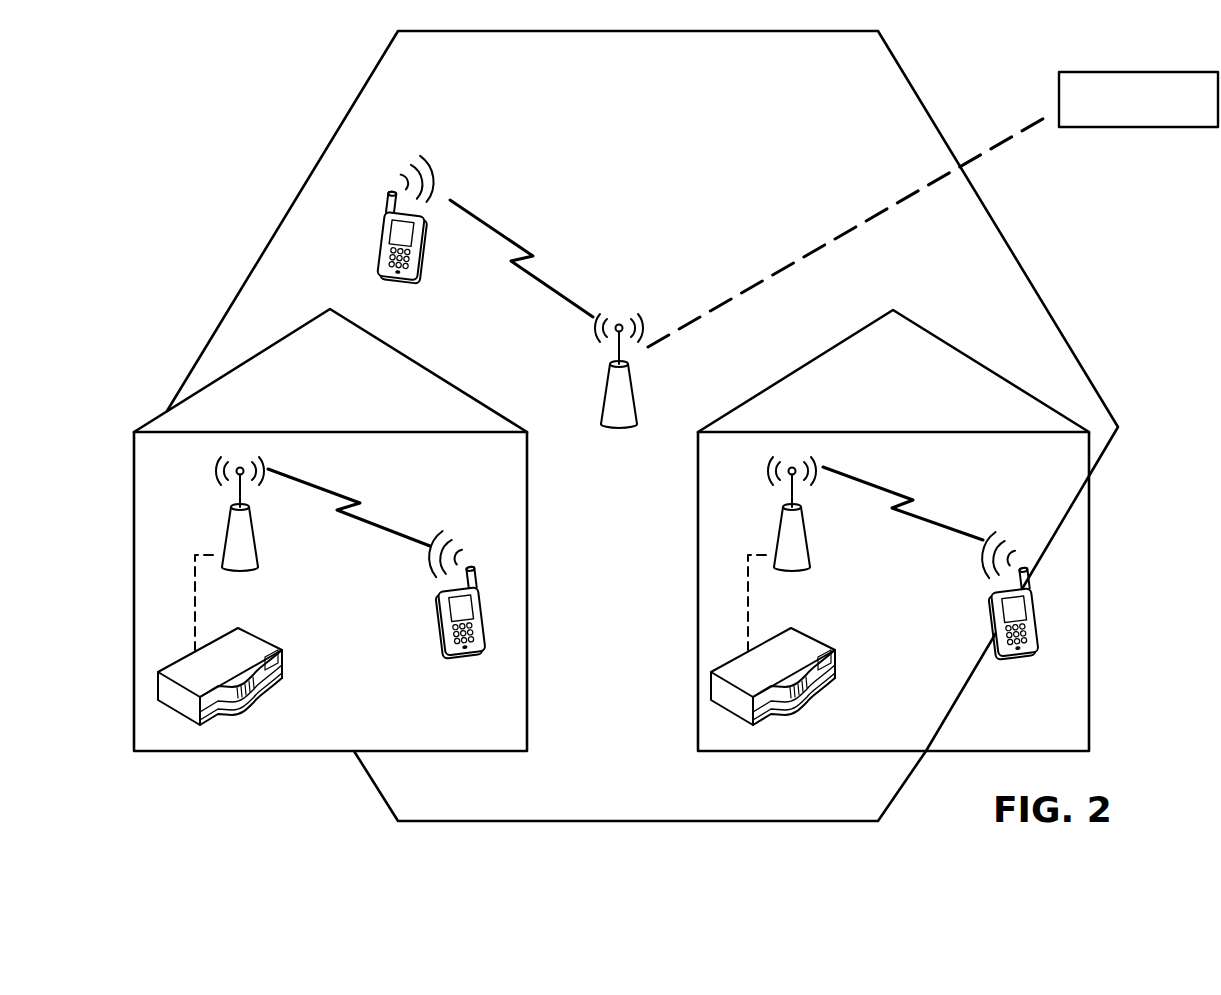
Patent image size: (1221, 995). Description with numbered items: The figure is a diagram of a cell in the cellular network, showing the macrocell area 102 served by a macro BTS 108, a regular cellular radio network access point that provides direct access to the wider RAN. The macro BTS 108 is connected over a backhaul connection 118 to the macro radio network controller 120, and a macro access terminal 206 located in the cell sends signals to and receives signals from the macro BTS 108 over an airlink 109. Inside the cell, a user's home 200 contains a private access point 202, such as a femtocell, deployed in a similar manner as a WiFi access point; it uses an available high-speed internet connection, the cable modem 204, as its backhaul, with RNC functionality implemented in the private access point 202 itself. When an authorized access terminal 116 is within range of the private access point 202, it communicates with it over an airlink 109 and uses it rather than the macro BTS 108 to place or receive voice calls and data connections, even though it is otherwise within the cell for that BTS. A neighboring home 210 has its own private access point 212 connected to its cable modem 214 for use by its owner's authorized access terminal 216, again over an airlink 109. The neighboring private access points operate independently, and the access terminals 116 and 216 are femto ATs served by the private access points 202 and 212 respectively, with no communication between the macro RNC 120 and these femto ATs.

The macrocell area 102 is at (337, 52).
The macro BTS 108 is at (599, 426).
The airlink 109 is at (625, 373).
The access terminal 116 is at (482, 655).
The backhaul connection 118 is at (826, 242).
The radio network controller 120 is at (1138, 99).
The home 200 is at (268, 752).
The private access point 202 is at (259, 567).
The cable modem 204 is at (223, 647).
The access terminal 206 is at (378, 276).
The neighboring home 210 is at (808, 752).
The private access point 212 is at (811, 567).
The cable modem 214 is at (776, 647).
The access terminal 216 is at (1034, 655).